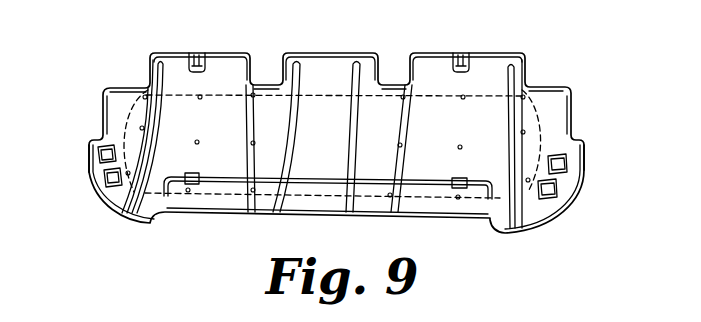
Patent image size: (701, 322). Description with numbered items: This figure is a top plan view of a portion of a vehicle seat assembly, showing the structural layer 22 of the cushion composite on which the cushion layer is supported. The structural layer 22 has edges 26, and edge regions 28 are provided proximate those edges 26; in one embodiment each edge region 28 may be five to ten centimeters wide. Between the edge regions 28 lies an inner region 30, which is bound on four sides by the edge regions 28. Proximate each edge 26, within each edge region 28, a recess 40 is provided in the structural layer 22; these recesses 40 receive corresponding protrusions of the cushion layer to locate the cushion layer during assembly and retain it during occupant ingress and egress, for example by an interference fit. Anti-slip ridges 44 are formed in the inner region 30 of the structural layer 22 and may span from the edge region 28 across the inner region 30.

The structural layer 22 is at (231, 70).
The edges 26 is at (88, 157).
The edge regions 28 is at (113, 115).
The inner region 30 is at (426, 95).
The recess 40 is at (103, 182).
The anti-slip ridges 44 is at (158, 63).